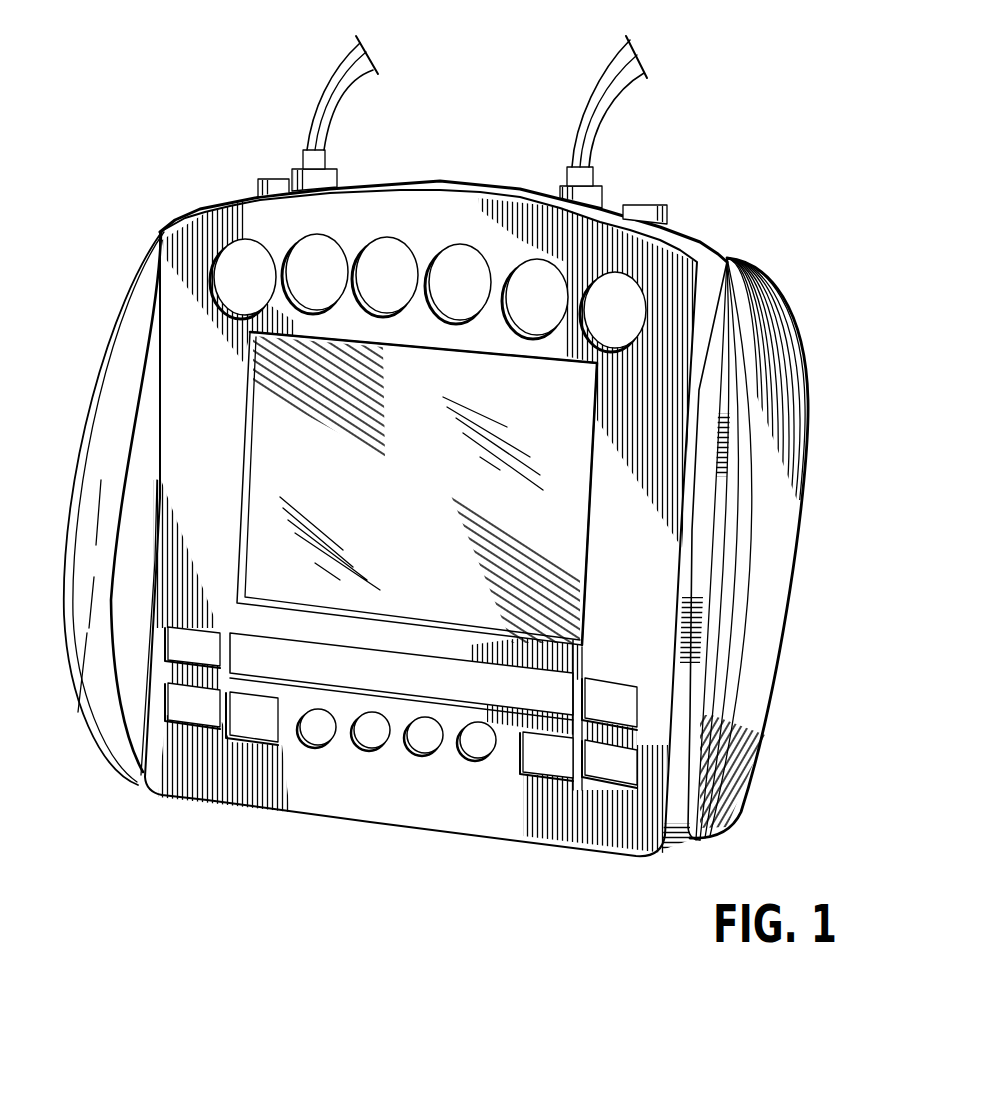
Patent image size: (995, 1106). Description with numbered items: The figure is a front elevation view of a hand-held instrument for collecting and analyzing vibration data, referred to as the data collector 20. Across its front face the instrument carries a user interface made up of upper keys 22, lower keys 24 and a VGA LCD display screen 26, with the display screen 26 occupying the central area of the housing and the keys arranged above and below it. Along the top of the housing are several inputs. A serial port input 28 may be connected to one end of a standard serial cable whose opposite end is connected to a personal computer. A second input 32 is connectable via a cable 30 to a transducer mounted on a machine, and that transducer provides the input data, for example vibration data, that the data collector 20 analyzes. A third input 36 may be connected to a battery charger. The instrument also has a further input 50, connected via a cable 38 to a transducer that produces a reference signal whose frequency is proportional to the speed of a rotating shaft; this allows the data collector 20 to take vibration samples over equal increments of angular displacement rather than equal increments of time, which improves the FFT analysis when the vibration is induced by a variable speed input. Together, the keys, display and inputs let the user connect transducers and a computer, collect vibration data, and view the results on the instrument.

The data collector 20 is at (826, 132).
The upper keys 22 is at (652, 286).
The lower keys 24 is at (486, 773).
The VGA LCD display screen 26 is at (388, 509).
The serial port input 28 is at (283, 179).
The cable 30 is at (318, 103).
The second input 32 is at (335, 166).
The third input 36 is at (650, 205).
The cable 38 is at (598, 82).
The further input 50 is at (561, 186).